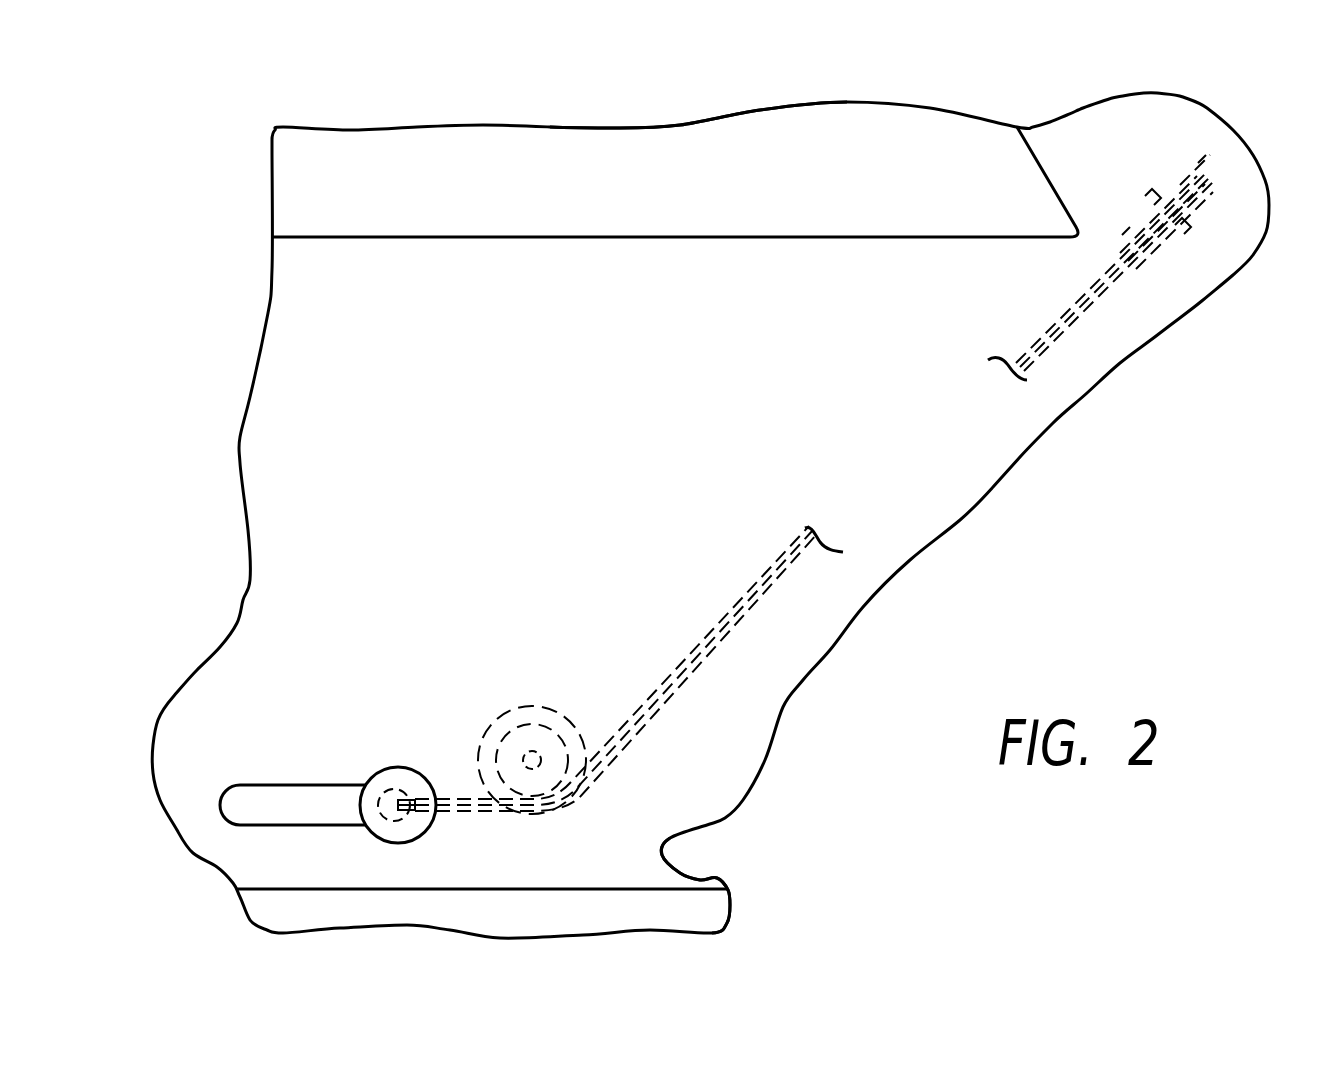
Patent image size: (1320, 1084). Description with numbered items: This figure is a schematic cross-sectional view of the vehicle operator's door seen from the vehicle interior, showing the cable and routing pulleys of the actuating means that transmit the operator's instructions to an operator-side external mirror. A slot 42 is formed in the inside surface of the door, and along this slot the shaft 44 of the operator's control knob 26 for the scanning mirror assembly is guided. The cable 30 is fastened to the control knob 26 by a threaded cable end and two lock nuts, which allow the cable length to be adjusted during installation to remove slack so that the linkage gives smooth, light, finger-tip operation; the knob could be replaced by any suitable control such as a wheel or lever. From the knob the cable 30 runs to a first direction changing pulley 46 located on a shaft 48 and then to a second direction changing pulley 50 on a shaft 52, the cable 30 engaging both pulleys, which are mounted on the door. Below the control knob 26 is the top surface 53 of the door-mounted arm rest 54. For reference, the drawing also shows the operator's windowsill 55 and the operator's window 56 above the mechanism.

The control knob 26 is at (408, 845).
The cable 30 is at (757, 597).
The slot 42 is at (272, 807).
The shaft 44 is at (384, 797).
The first direction changing pulley 46 is at (518, 712).
The shaft 48 is at (533, 752).
The second direction changing pulley 50 is at (1183, 182).
The shaft 52 is at (1137, 209).
The top surface 53 is at (314, 888).
The arm rest 54 is at (713, 912).
The windowsill 55 is at (570, 239).
The window 56 is at (679, 137).